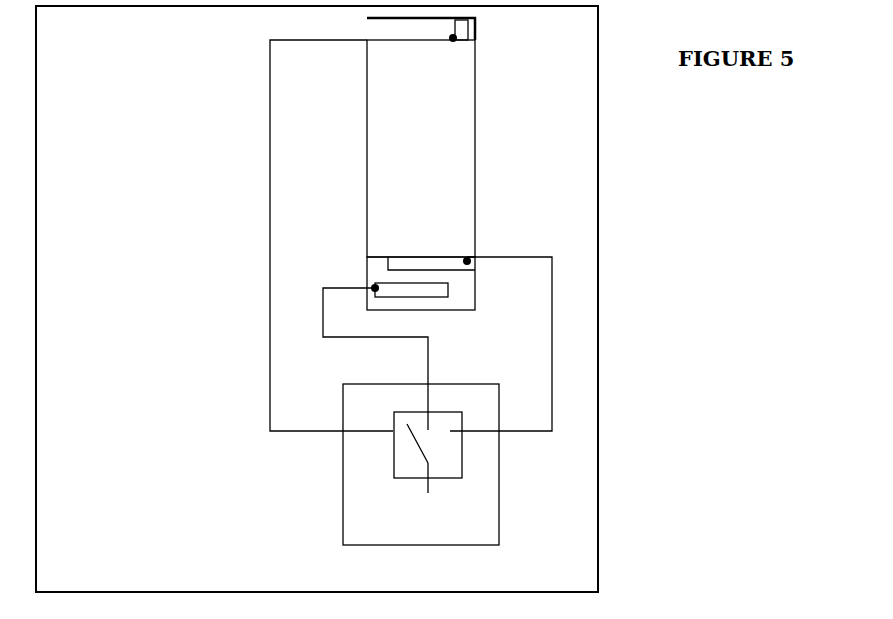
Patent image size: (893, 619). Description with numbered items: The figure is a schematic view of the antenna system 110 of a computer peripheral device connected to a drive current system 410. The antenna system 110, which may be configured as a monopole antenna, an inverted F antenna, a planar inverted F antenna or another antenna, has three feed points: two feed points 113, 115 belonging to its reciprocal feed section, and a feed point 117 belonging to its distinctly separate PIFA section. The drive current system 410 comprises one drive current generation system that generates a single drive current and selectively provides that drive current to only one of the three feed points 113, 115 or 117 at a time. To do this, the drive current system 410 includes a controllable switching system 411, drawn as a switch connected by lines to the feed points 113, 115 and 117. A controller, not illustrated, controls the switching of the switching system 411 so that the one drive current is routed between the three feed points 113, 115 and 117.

The antenna system 110 is at (173, 245).
The feed point 113 is at (468, 259).
The feed point 115 is at (374, 286).
The feed point 117 is at (451, 40).
The drive current system 410 is at (378, 464).
The controllable switching system 411 is at (464, 467).